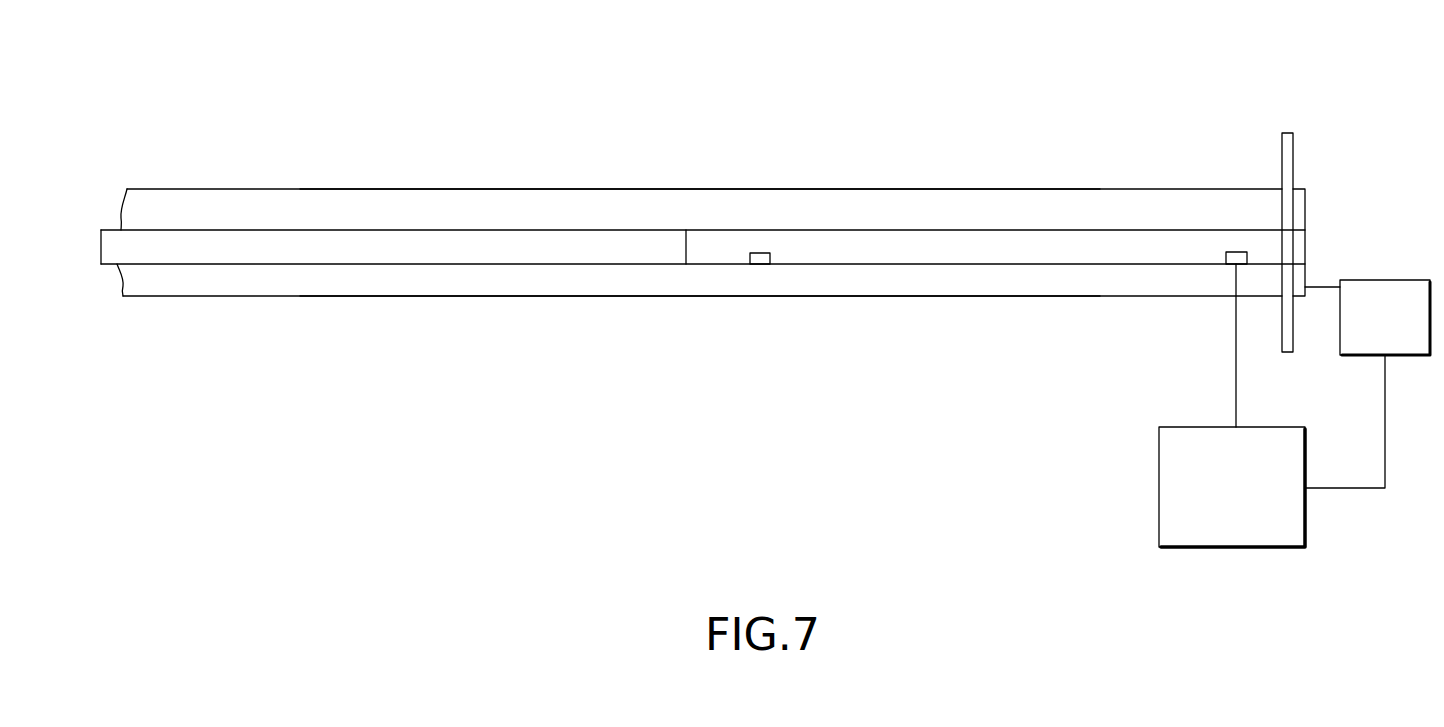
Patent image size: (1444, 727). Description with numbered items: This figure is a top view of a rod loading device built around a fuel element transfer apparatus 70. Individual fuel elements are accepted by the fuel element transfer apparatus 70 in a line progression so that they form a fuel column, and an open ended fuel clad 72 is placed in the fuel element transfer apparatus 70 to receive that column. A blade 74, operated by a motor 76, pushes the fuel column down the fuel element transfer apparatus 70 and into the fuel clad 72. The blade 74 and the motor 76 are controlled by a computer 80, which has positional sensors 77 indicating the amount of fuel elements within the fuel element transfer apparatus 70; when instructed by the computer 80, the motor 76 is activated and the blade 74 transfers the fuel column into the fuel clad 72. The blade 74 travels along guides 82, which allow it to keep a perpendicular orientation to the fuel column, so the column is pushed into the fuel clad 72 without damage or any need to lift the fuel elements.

The fuel element transfer apparatus 70 is at (1030, 230).
The fuel clad 72 is at (388, 229).
The blade 74 is at (1287, 132).
The motor 76 is at (1377, 280).
The positional sensors 77 is at (750, 255).
The computer 80 is at (1248, 500).
The guides 82 is at (862, 188).